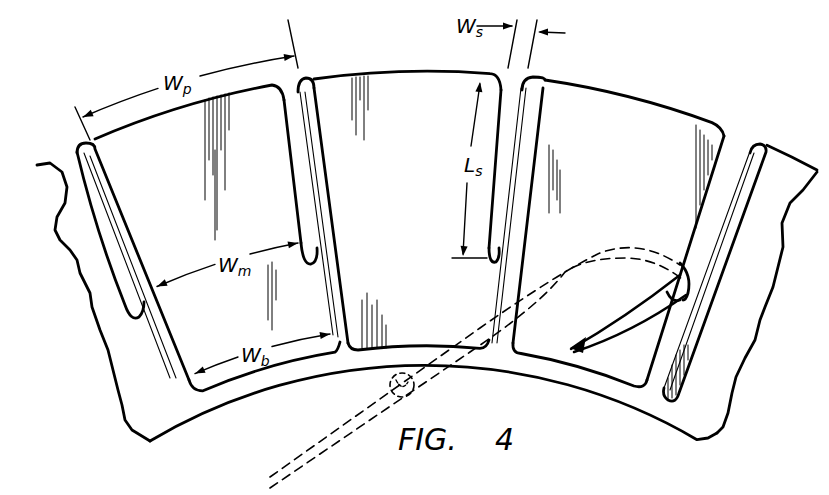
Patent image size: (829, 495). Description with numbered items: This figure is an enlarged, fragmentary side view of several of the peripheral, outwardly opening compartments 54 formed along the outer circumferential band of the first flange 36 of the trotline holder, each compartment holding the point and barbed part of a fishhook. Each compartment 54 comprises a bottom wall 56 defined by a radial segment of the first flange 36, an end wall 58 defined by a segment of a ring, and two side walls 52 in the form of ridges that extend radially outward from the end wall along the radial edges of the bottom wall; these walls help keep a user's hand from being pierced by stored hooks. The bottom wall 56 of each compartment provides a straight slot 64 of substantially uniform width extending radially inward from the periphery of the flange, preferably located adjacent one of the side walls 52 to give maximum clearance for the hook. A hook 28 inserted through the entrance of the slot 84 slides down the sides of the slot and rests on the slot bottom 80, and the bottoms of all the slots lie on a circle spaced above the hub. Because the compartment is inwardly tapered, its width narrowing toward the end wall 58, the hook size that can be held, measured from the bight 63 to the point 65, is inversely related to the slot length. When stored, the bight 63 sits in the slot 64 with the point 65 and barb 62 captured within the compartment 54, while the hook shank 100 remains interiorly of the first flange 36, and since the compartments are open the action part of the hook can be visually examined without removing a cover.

The first flange 36 is at (114, 128).
The compartment 54 is at (403, 97).
The slot 64 is at (287, 100).
The slot entrance 84 is at (540, 74).
The slot bottom 80 is at (313, 247).
The end wall 58 is at (431, 348).
The side wall 52 is at (113, 208).
The bottom wall 56 is at (406, 173).
The hook bight 63 is at (683, 263).
The barb 62 is at (614, 314).
The hook point 65 is at (573, 357).
The hook shank 100 is at (598, 250).
The hook 28 is at (645, 247).